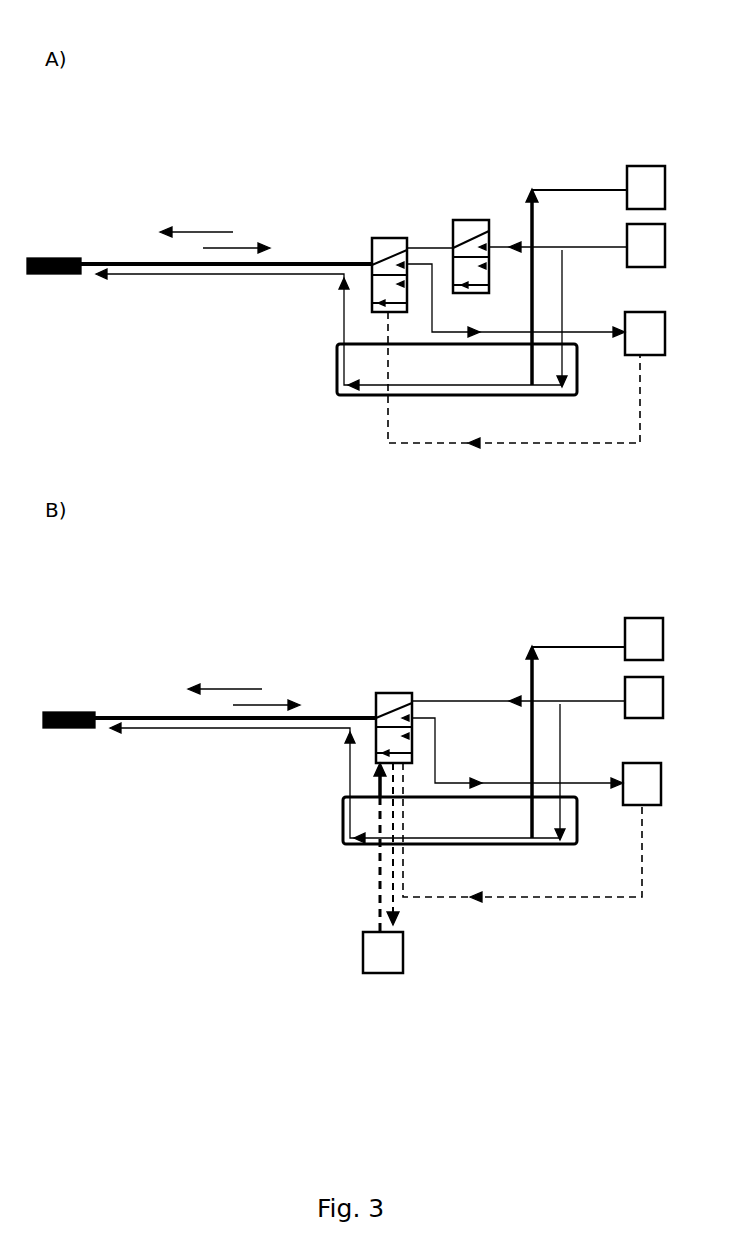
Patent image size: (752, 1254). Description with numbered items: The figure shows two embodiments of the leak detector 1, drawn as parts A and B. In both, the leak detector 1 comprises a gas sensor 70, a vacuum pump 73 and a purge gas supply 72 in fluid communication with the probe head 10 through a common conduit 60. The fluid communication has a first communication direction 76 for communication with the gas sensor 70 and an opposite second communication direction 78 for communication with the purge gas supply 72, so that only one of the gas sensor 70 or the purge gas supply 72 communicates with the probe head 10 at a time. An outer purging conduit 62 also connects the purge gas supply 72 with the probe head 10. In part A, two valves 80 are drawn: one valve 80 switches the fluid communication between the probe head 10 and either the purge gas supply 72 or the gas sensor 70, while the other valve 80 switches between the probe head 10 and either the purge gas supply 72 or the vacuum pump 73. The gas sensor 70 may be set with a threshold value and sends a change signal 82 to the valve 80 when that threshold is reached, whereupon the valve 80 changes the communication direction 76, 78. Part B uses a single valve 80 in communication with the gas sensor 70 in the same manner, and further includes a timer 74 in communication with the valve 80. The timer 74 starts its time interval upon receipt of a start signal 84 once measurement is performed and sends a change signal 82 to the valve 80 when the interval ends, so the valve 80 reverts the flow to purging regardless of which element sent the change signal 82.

The leak detector 1 is at (341, 119).
The probe head 10 is at (55, 276).
The common conduit 60 is at (134, 260).
The outer purging conduit 62 is at (183, 277).
The first communication direction 76 is at (262, 247).
The second communication direction 78 is at (196, 231).
The valve 80 is at (376, 237).
The gas sensor 70 is at (536, 534).
The purge gas supply 72 is at (538, 471).
The vacuum pump 73 is at (595, 502).
The timer 74 is at (383, 952).
The change signal 82 is at (545, 445).
The start signal 84 is at (398, 918).